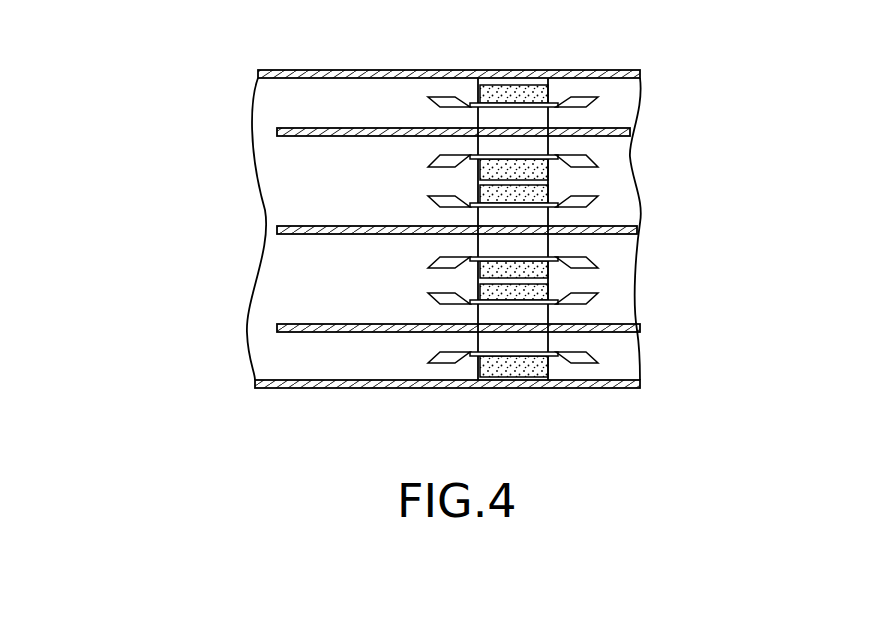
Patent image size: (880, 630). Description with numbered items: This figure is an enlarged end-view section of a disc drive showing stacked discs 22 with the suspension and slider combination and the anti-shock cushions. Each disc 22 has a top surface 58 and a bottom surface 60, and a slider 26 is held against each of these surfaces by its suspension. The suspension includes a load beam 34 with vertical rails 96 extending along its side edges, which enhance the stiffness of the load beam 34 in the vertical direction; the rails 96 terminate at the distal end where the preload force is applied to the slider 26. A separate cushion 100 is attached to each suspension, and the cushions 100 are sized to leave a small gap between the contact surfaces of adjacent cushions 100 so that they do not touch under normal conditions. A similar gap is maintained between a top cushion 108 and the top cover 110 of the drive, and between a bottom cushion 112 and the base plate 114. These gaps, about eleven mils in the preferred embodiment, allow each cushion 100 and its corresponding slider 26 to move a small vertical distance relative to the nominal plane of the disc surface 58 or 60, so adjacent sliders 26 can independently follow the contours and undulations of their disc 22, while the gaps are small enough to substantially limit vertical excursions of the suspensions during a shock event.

The top cover 110 is at (320, 70).
The top cushion 108 is at (517, 95).
The vertical rails 96 is at (440, 103).
The slider 26 is at (540, 118).
The bottom surface 60 is at (372, 137).
The cushion 100 is at (535, 172).
The disc 22 is at (277, 229).
The top surface 58 is at (322, 323).
The load beam 34 is at (468, 356).
The bottom cushion 112 is at (532, 365).
The base plate 114 is at (327, 388).